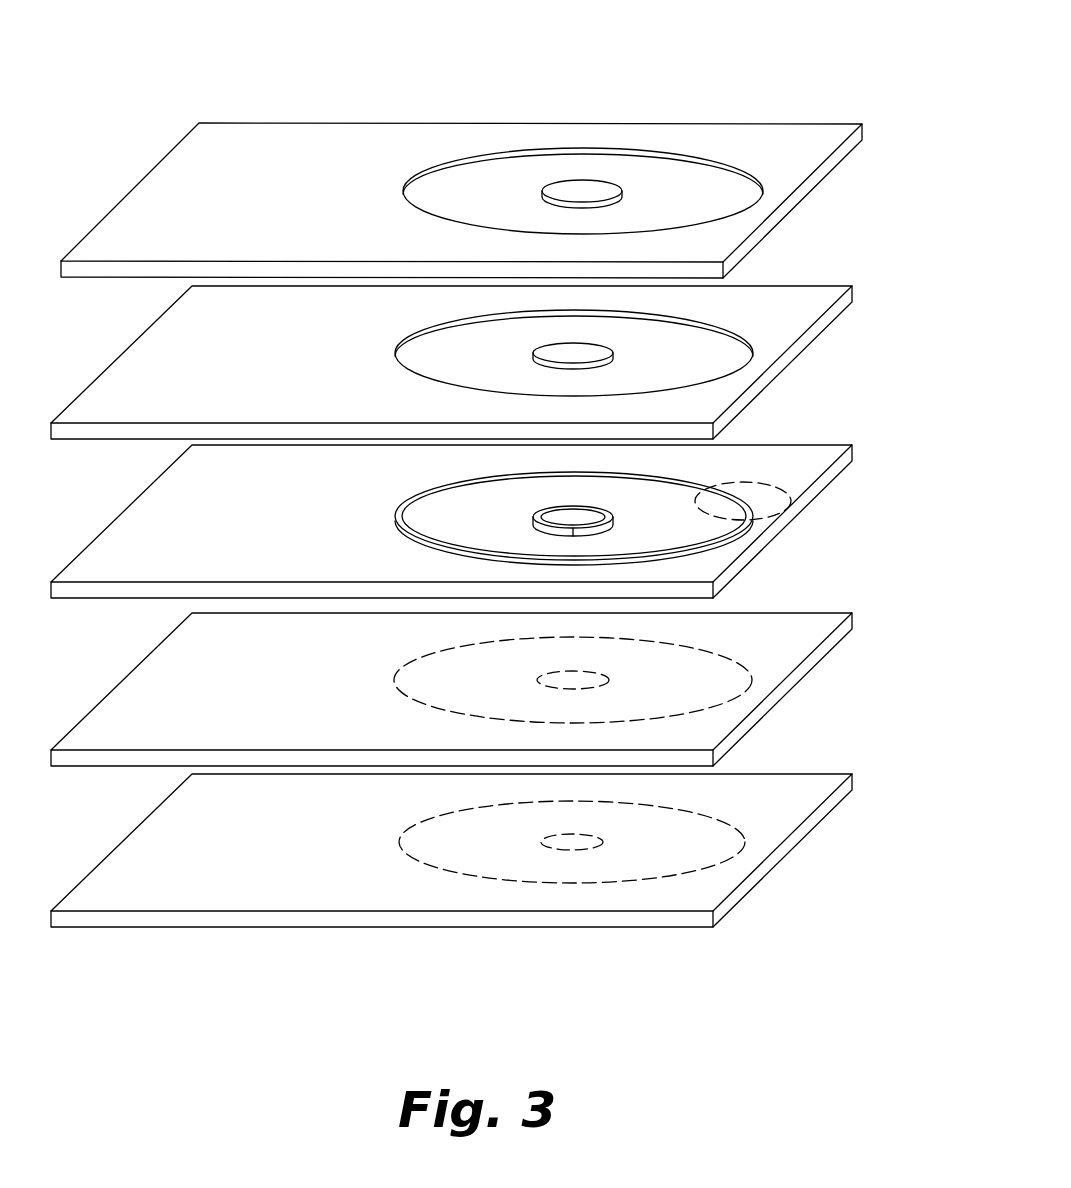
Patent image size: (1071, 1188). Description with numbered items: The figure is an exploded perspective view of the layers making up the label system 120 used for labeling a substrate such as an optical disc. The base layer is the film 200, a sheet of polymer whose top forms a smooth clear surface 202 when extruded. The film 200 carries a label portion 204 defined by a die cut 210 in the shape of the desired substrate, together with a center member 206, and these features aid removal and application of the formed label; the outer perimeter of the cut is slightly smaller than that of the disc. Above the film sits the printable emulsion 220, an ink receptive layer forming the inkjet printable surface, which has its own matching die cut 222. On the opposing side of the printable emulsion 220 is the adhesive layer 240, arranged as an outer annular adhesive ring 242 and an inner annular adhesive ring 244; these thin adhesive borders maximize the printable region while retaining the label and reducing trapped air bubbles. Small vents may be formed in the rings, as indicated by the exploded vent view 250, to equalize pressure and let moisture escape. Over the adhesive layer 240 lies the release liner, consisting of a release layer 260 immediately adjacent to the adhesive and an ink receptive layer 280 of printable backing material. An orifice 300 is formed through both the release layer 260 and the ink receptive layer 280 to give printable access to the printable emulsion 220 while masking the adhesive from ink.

The label system 120 is at (848, 102).
The film 200 is at (165, 875).
The smooth clear surface 202 is at (230, 885).
The label portion 204 is at (450, 842).
The center member 206 is at (573, 843).
The die cut 210 is at (742, 838).
The printable emulsion 220 is at (162, 712).
The die cut 222 is at (748, 690).
The adhesive layer 240 is at (180, 528).
The outer annular adhesive ring 242 is at (735, 538).
The inner annular adhesive ring 244 is at (535, 522).
The exploded vent view 250 is at (793, 500).
The release layer 260 is at (164, 372).
The ink receptive layer 280 is at (233, 141).
The orifice 300 is at (512, 180).